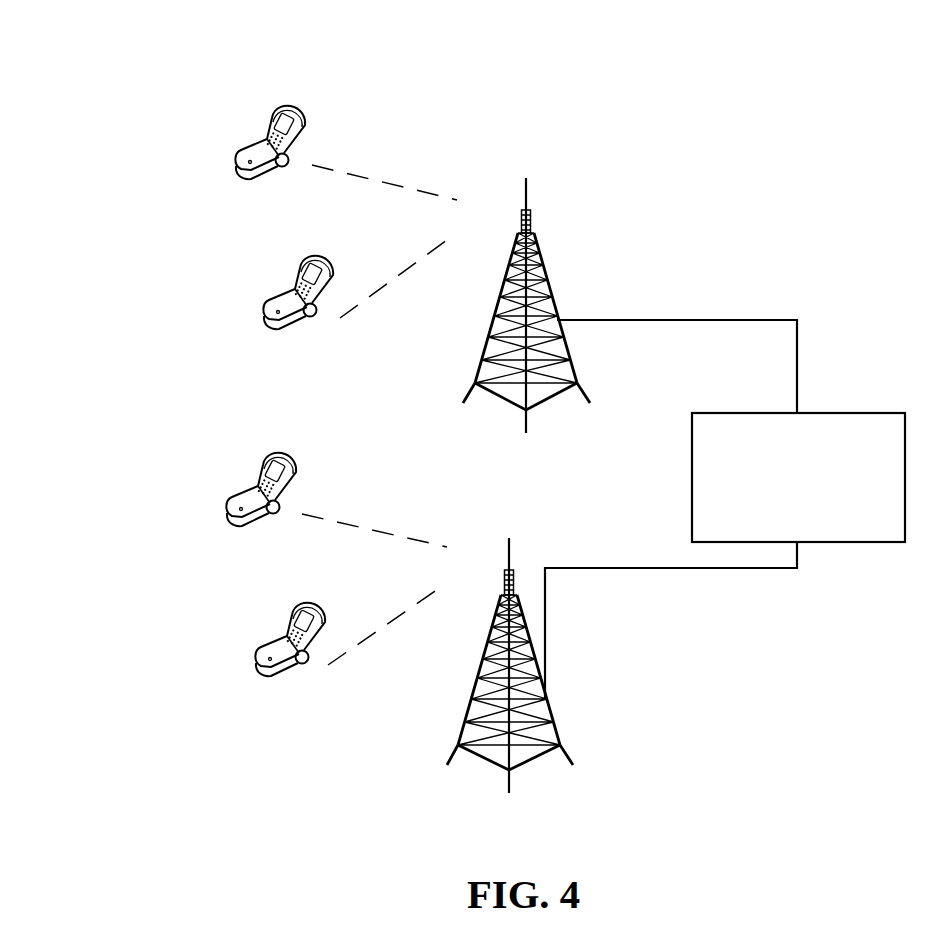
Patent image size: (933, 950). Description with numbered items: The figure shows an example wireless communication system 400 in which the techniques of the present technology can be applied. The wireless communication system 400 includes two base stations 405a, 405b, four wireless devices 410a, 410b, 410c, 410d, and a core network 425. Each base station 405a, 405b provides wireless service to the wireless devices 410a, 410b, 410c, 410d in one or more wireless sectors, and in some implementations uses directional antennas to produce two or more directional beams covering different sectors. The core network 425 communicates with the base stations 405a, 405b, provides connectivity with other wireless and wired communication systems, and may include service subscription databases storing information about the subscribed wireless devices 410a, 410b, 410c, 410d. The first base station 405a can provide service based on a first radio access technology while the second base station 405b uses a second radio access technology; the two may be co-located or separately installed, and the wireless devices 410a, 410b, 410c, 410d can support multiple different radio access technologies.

The wireless communication system 400 is at (43, 46).
The first base station 405a is at (541, 259).
The second base station 405b is at (520, 577).
The wireless device 410a is at (270, 113).
The wireless device 410b is at (298, 263).
The wireless device 410c is at (261, 460).
The wireless device 410d is at (290, 610).
The core network 425 is at (712, 413).